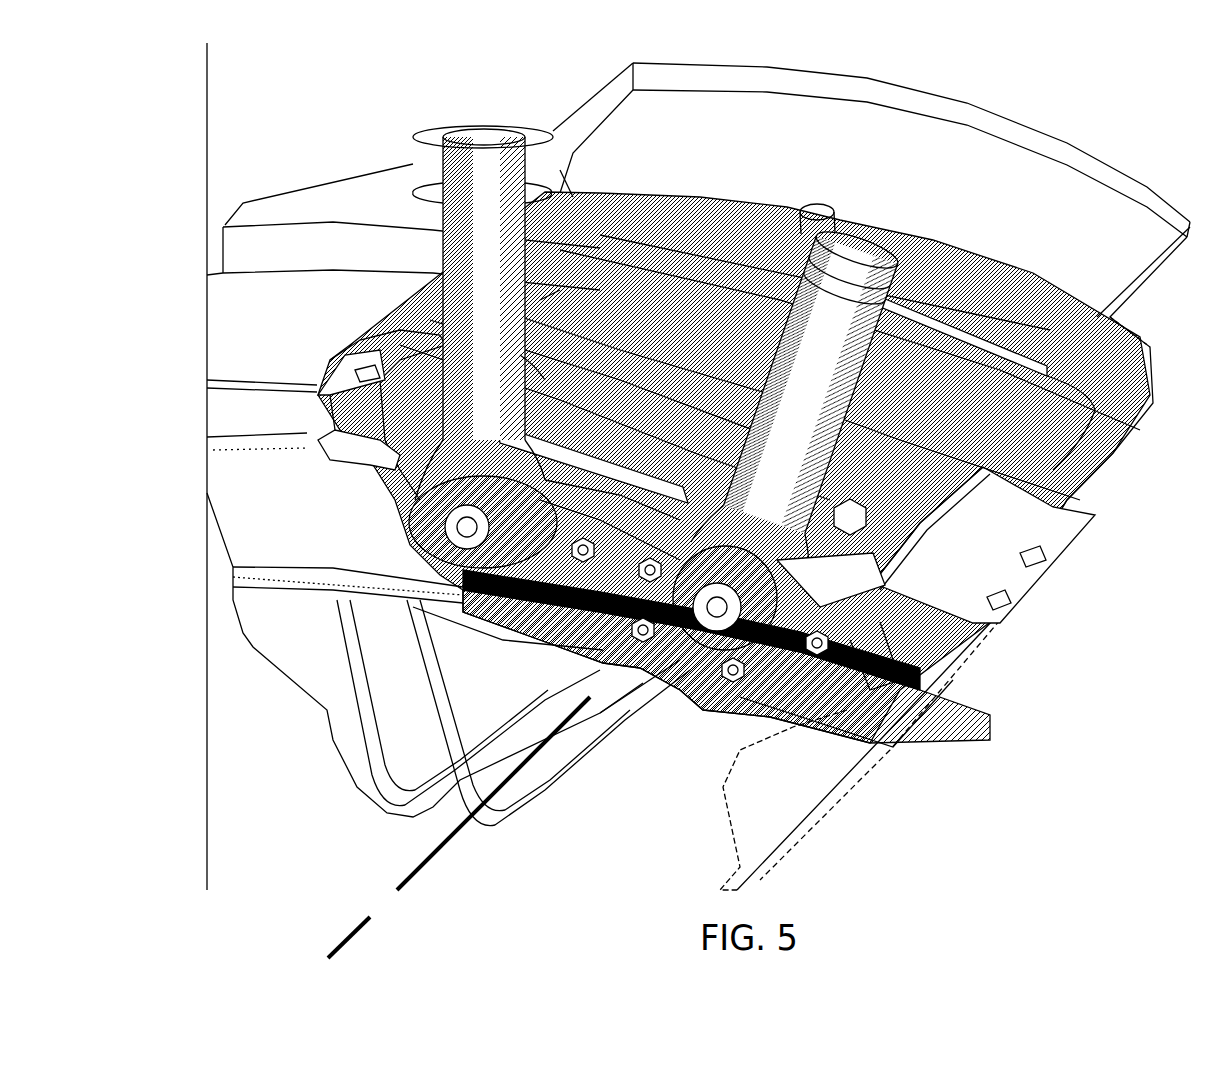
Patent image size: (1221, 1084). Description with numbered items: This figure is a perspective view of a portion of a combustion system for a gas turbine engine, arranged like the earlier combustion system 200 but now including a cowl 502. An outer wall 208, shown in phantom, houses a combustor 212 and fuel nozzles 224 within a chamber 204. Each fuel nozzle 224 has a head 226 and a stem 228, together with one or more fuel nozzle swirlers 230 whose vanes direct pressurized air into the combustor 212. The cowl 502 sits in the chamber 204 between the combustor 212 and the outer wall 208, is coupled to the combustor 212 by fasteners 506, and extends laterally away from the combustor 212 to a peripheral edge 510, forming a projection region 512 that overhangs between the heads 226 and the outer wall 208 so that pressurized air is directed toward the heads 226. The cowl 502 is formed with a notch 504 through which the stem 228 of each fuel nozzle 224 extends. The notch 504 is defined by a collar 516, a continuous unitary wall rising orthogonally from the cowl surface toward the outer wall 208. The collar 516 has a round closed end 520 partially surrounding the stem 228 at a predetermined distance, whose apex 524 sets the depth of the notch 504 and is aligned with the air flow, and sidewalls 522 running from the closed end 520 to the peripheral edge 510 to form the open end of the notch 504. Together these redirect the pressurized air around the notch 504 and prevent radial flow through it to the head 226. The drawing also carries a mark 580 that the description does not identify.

The combustion system 200 is at (1075, 103).
The chamber 204 is at (250, 325).
The outer wall 208 is at (332, 210).
The combustor 212 is at (508, 603).
The fuel nozzles 224 is at (527, 173).
The head 226 is at (453, 587).
The stem 228 is at (400, 345).
The fuel nozzle swirlers 230 is at (452, 597).
The cowl 502 is at (672, 490).
The notch 504 is at (383, 500).
The fasteners 506 is at (350, 363).
The peripheral edge 510 is at (328, 455).
The projection region 512 is at (883, 590).
The collar 516 is at (535, 417).
The closed end 520 is at (535, 362).
The sidewalls 522 is at (500, 445).
The apex 524 is at (558, 302).
The section line 580 is at (420, 873).